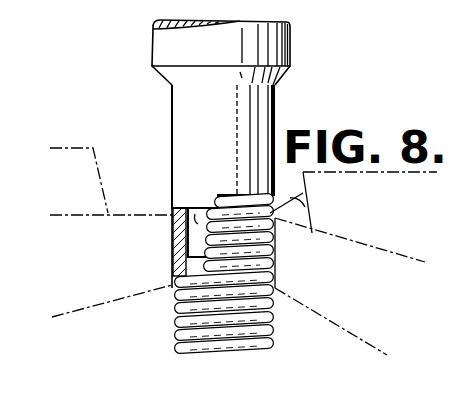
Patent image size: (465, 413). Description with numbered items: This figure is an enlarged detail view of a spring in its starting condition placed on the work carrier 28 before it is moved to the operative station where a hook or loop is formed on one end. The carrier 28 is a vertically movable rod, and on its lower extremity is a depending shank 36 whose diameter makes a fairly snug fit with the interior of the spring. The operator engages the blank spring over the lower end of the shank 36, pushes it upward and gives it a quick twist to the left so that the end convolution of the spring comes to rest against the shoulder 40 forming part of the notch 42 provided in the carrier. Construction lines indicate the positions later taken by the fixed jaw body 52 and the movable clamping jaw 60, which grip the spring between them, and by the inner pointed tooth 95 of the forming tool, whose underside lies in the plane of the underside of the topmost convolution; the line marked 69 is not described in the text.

The carrier 28 is at (182, 111).
The shoulder 40 is at (216, 196).
The notch 42 is at (238, 194).
The shank 36 is at (187, 208).
The fixed jaw body 52 is at (122, 307).
The inner pointed tooth 95 is at (308, 208).
The movable clamping jaw 60 is at (330, 317).
The reference line 69 is at (370, 290).